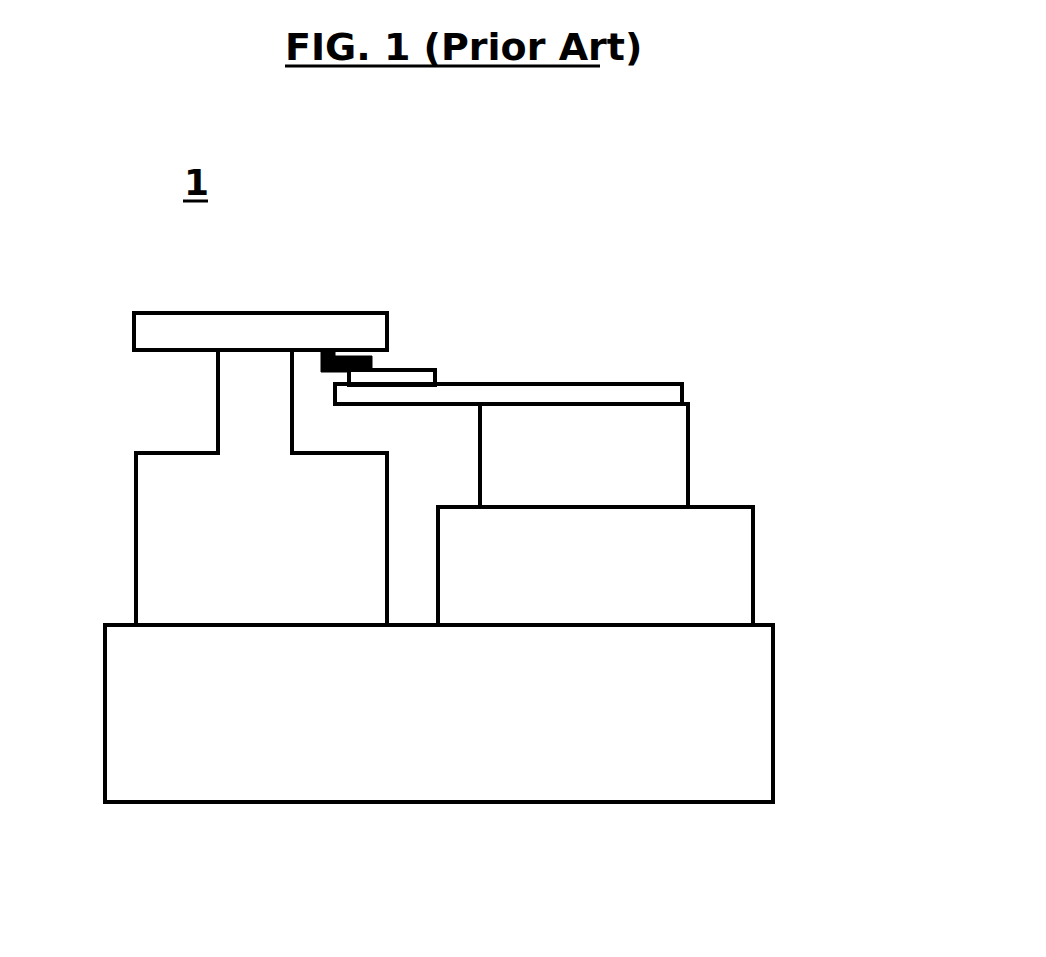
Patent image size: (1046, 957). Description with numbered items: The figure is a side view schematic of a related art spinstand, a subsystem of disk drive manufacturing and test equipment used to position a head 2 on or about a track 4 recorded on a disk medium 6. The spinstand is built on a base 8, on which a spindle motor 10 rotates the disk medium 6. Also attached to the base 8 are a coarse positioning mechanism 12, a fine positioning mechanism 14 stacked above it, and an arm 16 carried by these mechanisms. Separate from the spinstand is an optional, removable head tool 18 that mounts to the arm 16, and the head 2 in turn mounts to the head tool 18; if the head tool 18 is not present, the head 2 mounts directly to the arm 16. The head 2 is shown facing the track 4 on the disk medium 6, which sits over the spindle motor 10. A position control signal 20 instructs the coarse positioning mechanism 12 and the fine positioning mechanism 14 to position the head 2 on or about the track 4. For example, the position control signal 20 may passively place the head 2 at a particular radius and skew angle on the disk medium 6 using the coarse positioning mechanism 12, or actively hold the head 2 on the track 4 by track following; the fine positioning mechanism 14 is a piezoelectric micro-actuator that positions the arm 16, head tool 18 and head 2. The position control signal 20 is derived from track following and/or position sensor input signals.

The head 2 is at (380, 357).
The track 4 is at (331, 338).
The disk medium 6 is at (175, 332).
The base 8 is at (700, 718).
The spindle motor 10 is at (173, 540).
The coarse positioning mechanism 12 is at (693, 567).
The fine positioning mechanism 14 is at (647, 455).
The arm 16 is at (647, 392).
The head tool 18 is at (417, 378).
The position control signal 20 is at (820, 507).